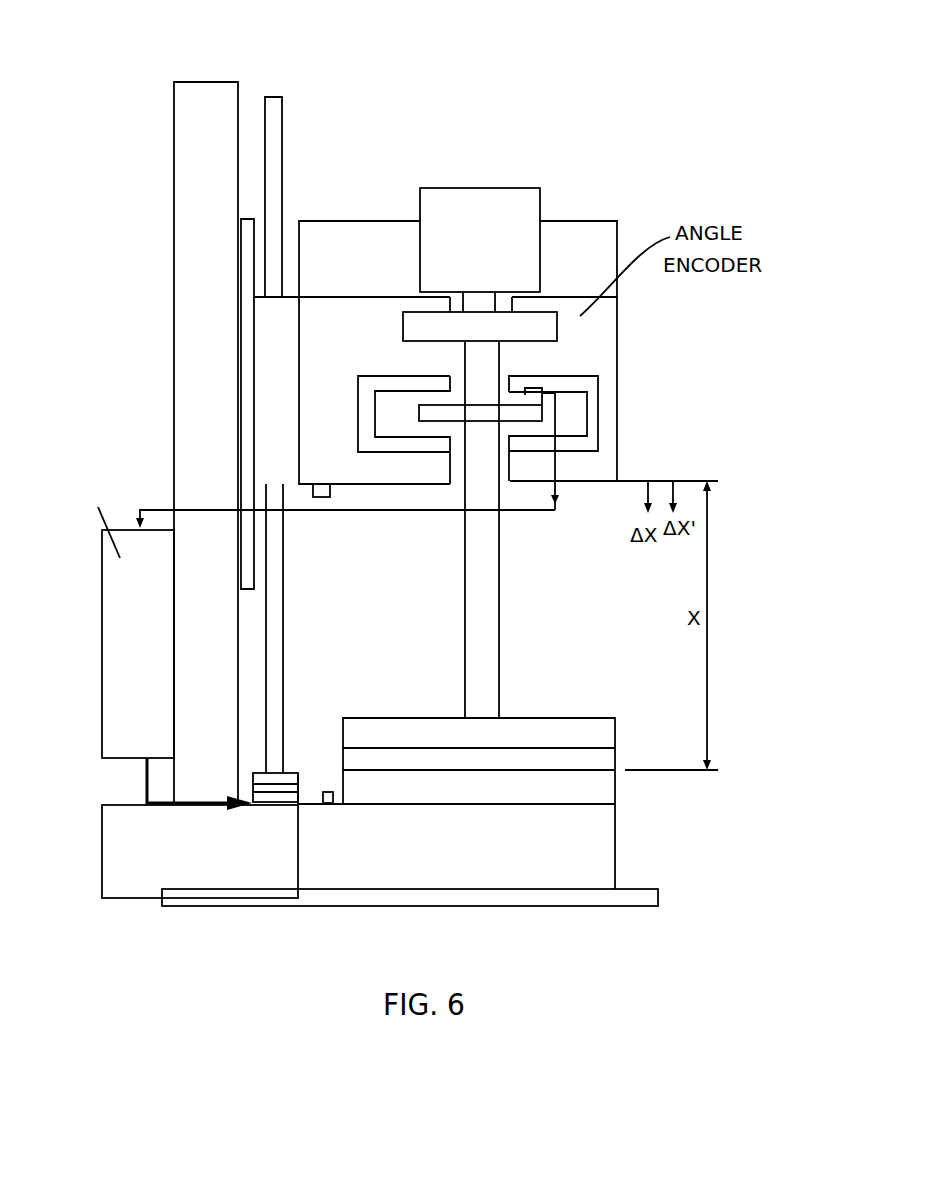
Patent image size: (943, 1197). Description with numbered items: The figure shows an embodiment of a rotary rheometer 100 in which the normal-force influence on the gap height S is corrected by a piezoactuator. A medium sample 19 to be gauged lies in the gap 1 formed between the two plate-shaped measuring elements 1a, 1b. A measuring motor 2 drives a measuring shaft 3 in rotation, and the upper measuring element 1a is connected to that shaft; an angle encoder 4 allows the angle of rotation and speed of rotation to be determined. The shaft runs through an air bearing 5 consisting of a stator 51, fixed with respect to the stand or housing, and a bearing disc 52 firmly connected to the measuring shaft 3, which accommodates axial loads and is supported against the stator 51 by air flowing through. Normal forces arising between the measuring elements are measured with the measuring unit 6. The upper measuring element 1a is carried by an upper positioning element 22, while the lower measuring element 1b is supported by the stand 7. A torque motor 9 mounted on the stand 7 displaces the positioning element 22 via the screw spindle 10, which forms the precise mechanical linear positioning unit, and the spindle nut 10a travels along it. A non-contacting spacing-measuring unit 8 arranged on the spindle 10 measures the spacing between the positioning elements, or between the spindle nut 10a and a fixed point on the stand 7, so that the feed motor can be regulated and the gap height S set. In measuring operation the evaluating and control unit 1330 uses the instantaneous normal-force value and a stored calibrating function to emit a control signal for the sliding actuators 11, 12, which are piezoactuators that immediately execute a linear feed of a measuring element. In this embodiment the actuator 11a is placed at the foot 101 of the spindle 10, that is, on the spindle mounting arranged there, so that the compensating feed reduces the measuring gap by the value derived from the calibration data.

The rotary rheometer 100 is at (503, 138).
The gap 1 is at (535, 753).
The upper measuring element 1a is at (412, 737).
The lower measuring element 1b is at (588, 783).
The medium sample 19 is at (617, 755).
The gap height S is at (620, 767).
The measuring motor 2 is at (540, 200).
The measuring shaft 3 is at (478, 551).
The angle encoder 4 is at (446, 337).
The air bearing 5 is at (575, 413).
The measuring unit 6 is at (558, 372).
The stator 51 is at (412, 385).
The bearing disc 52 is at (518, 421).
The upper positioning element 22 is at (607, 322).
The stand 7 is at (174, 298).
The spacing-measuring unit 8 is at (322, 497).
The torque motor 9 is at (142, 883).
The screw spindle 10 is at (268, 97).
The spindle nut 10a is at (267, 365).
The sliding actuator 11 is at (343, 674).
The sliding actuator 12 is at (373, 618).
The piezoactuator 11a is at (300, 798).
The foot of the spindle 101 is at (292, 773).
The evaluating and control unit 1330 is at (120, 727).